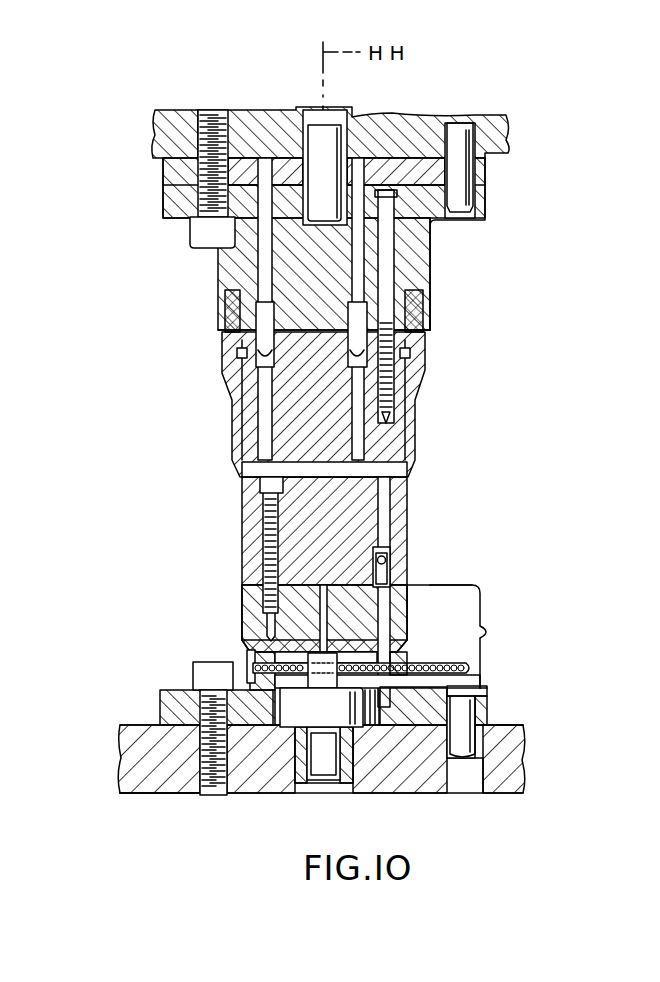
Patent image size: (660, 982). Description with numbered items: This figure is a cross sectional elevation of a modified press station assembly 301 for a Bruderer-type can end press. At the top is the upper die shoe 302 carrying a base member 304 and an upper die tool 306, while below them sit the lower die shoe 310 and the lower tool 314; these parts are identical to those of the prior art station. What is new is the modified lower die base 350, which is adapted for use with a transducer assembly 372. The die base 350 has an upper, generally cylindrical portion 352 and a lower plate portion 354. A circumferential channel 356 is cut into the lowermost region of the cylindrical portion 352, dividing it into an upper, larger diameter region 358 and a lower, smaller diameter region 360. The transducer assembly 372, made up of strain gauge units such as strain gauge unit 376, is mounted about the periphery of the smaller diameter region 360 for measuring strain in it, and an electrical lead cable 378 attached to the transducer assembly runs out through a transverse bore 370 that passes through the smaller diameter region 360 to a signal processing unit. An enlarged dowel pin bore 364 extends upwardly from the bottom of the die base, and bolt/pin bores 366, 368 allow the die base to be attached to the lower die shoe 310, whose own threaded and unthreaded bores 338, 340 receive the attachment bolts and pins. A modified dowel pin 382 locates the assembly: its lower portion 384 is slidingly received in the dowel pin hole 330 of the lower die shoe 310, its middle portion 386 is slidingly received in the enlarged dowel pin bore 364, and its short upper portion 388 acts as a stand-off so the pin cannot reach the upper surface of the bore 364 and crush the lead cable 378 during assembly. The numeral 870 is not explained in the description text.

The press station assembly 301 is at (528, 356).
The upper die shoe 302 is at (517, 135).
The base member 304 is at (437, 278).
The upper die tool 306 is at (432, 368).
The lower die shoe 310 is at (533, 765).
The lower tool 314 is at (417, 562).
The dowel pin hole 330 is at (302, 742).
The threaded bore 338 is at (190, 772).
The unthreaded bore 340 is at (483, 690).
The modified lower die base 350 is at (502, 588).
The upper generally cylindrical portion 352 is at (485, 607).
The lower plate portion 354 is at (493, 699).
The circumferential channel 356 is at (396, 662).
The upper larger diameter region 358 is at (248, 648).
The lower smaller diameter region 360 is at (400, 678).
The enlarged dowel pin bore 364 is at (363, 712).
The bolt/pin bore 366 is at (178, 716).
The bolt/pin bore 368 is at (497, 737).
The transverse bore 370 is at (268, 640).
The transducer assembly 372 is at (253, 665).
The strain gauge unit 376 is at (326, 657).
The electrical lead cable 378 is at (402, 675).
The modified dowel pin 382 is at (203, 795).
The lower portion 384 is at (298, 732).
The middle portion 386 is at (390, 727).
The upper portion 388 is at (392, 612).
The wall 870 is at (372, 686).